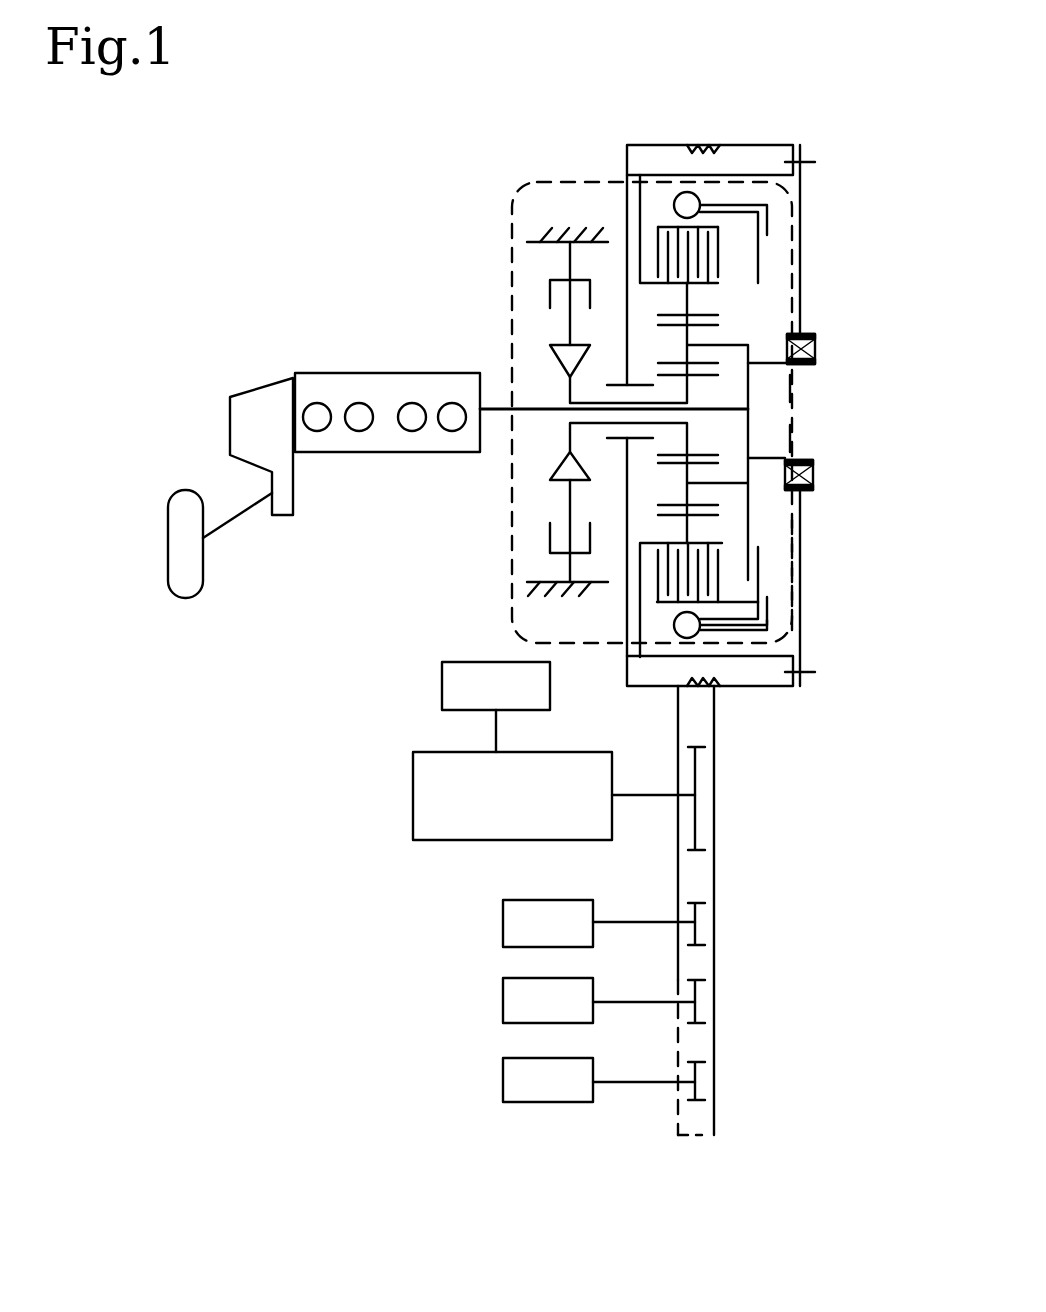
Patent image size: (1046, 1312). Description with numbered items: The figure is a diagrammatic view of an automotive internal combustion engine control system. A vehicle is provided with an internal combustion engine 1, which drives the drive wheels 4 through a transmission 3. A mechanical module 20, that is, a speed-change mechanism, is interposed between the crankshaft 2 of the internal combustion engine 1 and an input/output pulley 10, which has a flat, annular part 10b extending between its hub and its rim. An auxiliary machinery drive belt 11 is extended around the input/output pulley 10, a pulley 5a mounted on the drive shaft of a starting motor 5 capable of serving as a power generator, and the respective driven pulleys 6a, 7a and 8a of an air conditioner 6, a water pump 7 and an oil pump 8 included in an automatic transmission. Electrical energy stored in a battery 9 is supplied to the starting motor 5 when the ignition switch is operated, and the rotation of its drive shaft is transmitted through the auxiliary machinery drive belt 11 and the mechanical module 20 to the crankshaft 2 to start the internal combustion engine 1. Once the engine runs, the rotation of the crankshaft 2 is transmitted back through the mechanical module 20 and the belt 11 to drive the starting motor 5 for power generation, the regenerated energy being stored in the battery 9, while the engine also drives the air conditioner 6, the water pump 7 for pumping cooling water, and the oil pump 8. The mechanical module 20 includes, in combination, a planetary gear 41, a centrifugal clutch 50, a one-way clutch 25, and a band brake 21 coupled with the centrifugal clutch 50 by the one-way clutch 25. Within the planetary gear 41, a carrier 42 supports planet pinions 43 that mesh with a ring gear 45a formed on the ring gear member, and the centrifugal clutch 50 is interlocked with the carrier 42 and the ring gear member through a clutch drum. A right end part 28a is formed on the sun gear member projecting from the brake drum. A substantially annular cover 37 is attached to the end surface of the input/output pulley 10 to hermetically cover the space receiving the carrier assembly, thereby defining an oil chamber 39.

The internal combustion engine 1 is at (377, 373).
The crankshaft 2 is at (498, 413).
The transmission 3 is at (250, 387).
The drive wheels 4 is at (170, 590).
The starting motor 5 is at (413, 800).
The pulley 5a is at (697, 823).
The air conditioner 6 is at (503, 922).
The driven pulley 6a is at (697, 930).
The water pump 7 is at (503, 1002).
The driven pulley 7a is at (697, 1008).
The oil pump 8 is at (503, 1088).
The driven pulley 8a is at (697, 1090).
The battery 9 is at (442, 688).
The input/output pulley 10 is at (738, 158).
The flat annular part 10b is at (603, 641).
The auxiliary machinery drive belt 11 is at (715, 718).
The mechanical module 20 is at (513, 190).
The band brake 21 is at (537, 290).
The one-way clutch 25 is at (548, 353).
The right end part of sun gear member 28a is at (753, 388).
The cover 37 is at (800, 577).
The oil chamber 39 is at (771, 626).
The planetary gear 41 is at (737, 316).
The carrier 42 is at (753, 335).
The planet pinions 43 is at (688, 476).
The ring gear 45a is at (686, 297).
The centrifugal clutch 50 is at (660, 208).